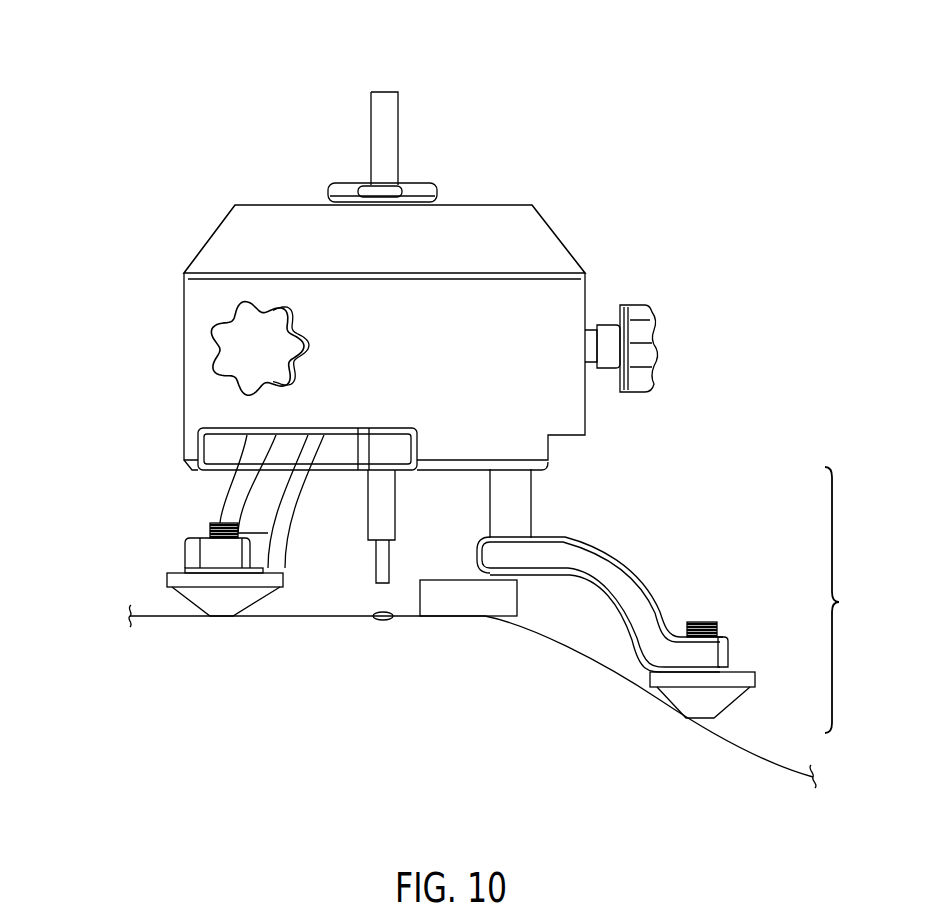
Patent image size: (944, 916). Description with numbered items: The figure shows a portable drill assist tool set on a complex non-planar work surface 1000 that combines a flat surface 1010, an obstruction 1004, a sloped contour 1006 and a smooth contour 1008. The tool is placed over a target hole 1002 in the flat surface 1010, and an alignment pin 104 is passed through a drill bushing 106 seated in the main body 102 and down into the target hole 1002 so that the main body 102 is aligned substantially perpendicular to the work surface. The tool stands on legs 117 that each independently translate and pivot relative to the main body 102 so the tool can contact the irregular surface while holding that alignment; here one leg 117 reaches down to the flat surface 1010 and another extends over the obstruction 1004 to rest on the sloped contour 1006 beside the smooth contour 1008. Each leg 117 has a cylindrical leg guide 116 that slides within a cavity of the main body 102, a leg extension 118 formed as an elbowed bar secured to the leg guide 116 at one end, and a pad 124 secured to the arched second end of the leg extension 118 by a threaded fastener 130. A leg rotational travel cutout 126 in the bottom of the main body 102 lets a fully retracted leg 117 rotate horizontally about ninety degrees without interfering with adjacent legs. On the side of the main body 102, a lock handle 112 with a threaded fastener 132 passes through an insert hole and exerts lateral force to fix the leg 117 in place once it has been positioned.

The complex non-planar work surface 1000 is at (676, 105).
The flat surface 1010 is at (160, 618).
The target hole 1002 is at (383, 622).
The obstruction 1004 is at (470, 607).
The sloped contour 1006 is at (677, 710).
The smooth contour 1008 is at (787, 768).
The leg 117 is at (845, 600).
The main body 102 is at (546, 240).
The alignment pin 104 is at (380, 145).
The drill bushing 106 is at (412, 188).
The lock handle 112 is at (637, 353).
The threaded fastener 132 is at (590, 330).
The leg rotational travel cutout 126 is at (208, 455).
The pad 124 is at (172, 583).
The leg guide 116 is at (517, 508).
The leg extension 118 is at (630, 583).
The threaded fastener 130 is at (717, 628).